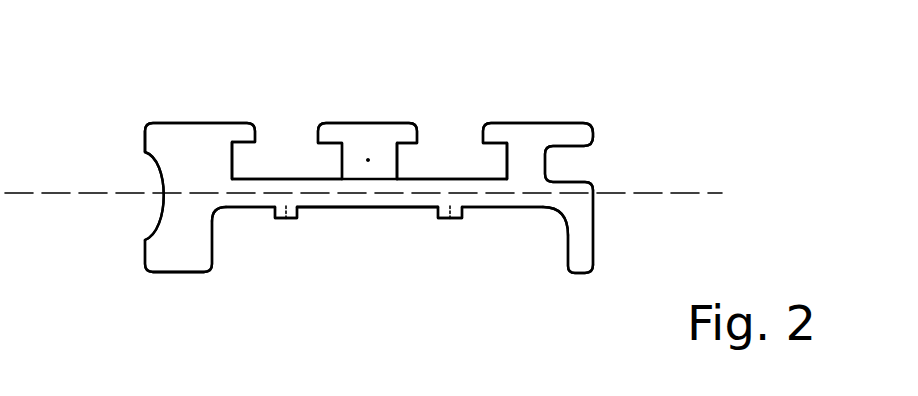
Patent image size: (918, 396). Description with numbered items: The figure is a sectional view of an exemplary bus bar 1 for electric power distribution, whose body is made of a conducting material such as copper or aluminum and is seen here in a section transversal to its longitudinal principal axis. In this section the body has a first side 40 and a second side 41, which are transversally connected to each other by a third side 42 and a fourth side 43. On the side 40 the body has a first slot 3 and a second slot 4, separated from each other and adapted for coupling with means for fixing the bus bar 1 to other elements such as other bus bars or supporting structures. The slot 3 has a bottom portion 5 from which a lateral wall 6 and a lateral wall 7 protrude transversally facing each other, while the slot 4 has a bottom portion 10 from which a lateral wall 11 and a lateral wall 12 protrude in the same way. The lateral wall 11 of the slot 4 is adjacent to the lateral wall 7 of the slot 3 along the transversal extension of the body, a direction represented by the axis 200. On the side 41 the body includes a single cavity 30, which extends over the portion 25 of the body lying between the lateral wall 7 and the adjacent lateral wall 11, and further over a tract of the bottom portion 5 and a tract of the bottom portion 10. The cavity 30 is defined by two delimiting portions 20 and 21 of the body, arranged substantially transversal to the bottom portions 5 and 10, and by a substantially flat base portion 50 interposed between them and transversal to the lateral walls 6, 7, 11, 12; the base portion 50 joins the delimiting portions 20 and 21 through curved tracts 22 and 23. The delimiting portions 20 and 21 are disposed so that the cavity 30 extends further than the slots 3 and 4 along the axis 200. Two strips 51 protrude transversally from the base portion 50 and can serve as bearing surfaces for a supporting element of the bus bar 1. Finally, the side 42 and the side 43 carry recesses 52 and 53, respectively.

The bus bar 1 is at (637, 101).
The first slot 3 is at (270, 155).
The second slot 4 is at (437, 146).
The bottom portion 5 is at (289, 177).
The lateral wall 6 is at (229, 158).
The lateral wall 7 is at (368, 157).
The bottom portion 10 is at (452, 177).
The lateral wall 11 is at (401, 159).
The lateral wall 12 is at (508, 160).
The delimiting portion 20 is at (186, 239).
The delimiting portion 21 is at (569, 243).
The curved tract 22 is at (220, 215).
The curved tract 23 is at (548, 213).
The portion of the body 25 is at (368, 166).
The cavity 30 is at (357, 234).
The first side 40 is at (188, 121).
The second side 41 is at (184, 275).
The third side 42 is at (142, 148).
The fourth side 43 is at (597, 235).
The base portion 50 is at (405, 212).
The strips 51 is at (287, 222).
The recess 52 is at (142, 213).
The recess 53 is at (577, 167).
The axis 200 is at (701, 191).